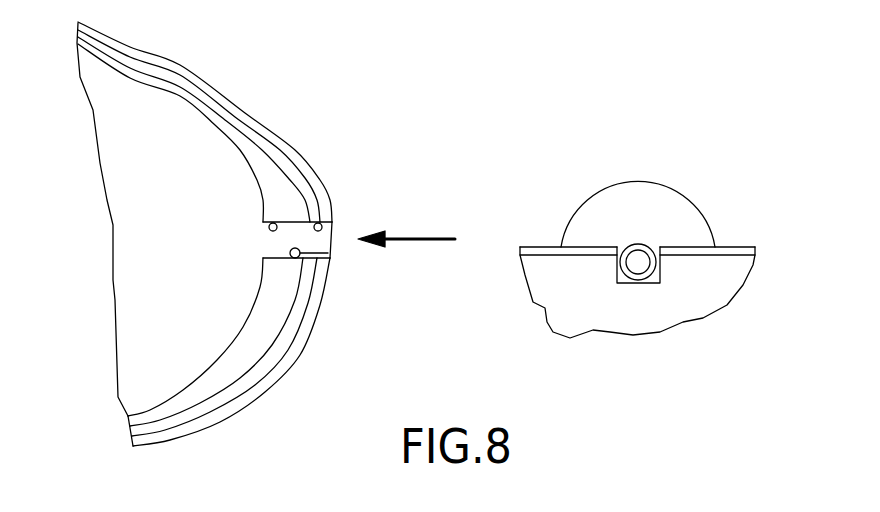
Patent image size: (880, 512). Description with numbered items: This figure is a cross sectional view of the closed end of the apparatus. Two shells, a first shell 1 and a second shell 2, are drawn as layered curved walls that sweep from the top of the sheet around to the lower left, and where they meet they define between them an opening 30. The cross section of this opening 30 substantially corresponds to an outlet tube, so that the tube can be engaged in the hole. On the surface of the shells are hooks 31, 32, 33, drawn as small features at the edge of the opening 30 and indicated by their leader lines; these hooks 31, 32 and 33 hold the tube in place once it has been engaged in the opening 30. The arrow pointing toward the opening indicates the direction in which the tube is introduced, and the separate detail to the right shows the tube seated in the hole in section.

The shell 1 is at (290, 346).
The shell 2 is at (320, 167).
The opening 30 is at (338, 237).
The hook 31 is at (274, 222).
The hook 32 is at (335, 236).
The hook 33 is at (338, 242).